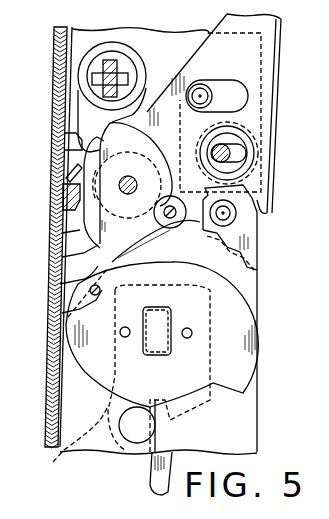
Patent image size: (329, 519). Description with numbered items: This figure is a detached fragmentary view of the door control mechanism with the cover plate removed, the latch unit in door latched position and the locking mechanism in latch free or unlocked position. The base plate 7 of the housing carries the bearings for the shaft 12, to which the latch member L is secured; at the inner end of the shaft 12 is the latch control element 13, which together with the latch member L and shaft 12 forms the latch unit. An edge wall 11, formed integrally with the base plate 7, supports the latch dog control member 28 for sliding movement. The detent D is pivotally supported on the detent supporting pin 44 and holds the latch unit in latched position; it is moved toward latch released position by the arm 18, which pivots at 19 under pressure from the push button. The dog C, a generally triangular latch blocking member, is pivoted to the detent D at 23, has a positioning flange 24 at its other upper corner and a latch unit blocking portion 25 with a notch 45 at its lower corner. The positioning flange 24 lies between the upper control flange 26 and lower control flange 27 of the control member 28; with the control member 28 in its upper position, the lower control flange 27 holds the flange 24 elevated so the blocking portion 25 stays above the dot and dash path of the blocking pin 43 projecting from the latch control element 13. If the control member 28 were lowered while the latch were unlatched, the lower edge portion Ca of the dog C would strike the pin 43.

The base plate 7 is at (255, 417).
The edge wall 11 is at (55, 70).
The shaft 12 is at (152, 355).
The latch control element 13 is at (70, 350).
The arm 18 is at (273, 80).
The pivot 19 is at (258, 227).
The pivot 23 is at (170, 230).
The positioning flange 24 is at (66, 173).
The latch unit blocking portion 25 is at (62, 257).
The upper control flange 26 is at (72, 156).
The lower control flange 27 is at (60, 202).
The latch dog control member 28 is at (64, 116).
The blocking pin 43 is at (62, 313).
The detent supporting pin 44 is at (140, 179).
The notch 45 is at (62, 290).
The dog C is at (62, 233).
The detent D is at (110, 237).
The latch member L is at (75, 439).
The lower edge portion Ca is at (171, 293).